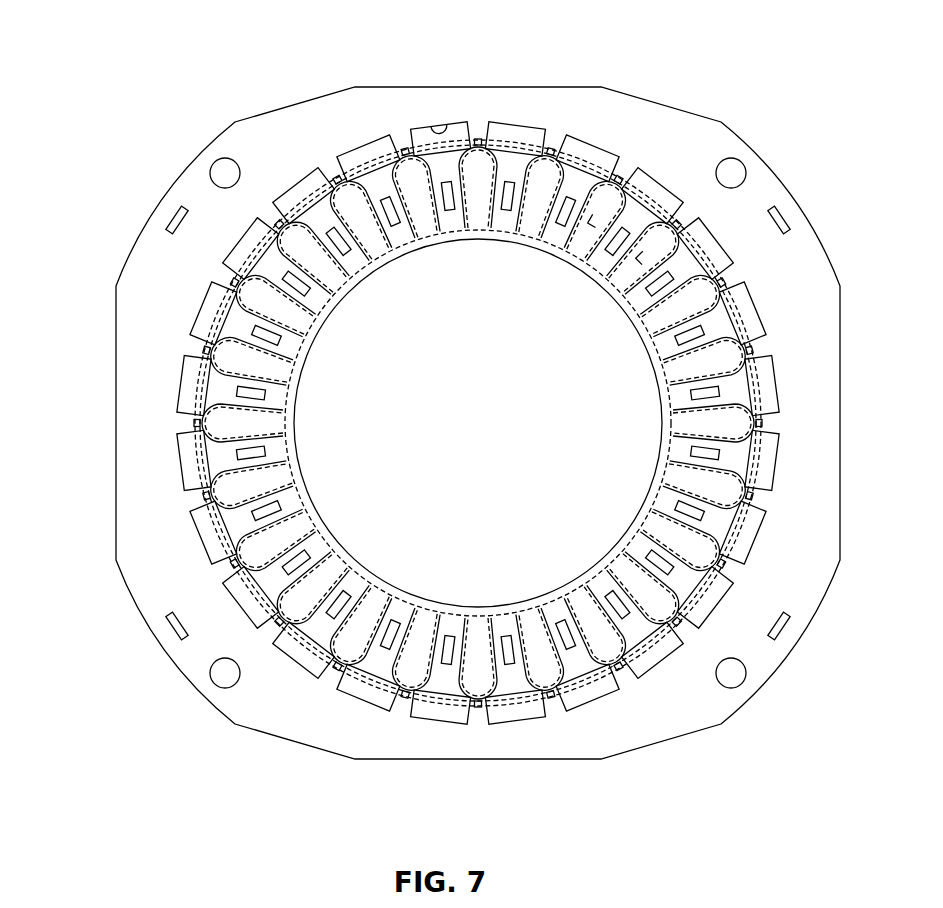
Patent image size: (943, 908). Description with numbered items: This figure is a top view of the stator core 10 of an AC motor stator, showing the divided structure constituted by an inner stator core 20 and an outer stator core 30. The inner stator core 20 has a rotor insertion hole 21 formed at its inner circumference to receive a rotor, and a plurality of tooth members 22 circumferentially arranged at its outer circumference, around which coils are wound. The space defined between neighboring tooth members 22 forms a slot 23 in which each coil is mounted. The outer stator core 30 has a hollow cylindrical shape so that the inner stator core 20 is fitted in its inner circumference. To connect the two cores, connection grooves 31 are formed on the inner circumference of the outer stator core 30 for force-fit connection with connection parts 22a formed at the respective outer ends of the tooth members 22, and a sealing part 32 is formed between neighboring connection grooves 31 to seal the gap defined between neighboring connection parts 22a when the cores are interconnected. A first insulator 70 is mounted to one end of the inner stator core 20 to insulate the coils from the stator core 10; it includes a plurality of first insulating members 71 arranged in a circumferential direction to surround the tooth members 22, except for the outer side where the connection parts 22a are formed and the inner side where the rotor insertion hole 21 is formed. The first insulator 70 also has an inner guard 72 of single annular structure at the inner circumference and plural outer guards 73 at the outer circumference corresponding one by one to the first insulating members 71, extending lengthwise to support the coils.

The stator core 10 is at (70, 128).
The inner stator core 20 is at (299, 176).
The rotor insertion hole 21 is at (478, 423).
The tooth member 22 is at (539, 139).
The connection part 22a is at (453, 95).
The slot 23 is at (632, 185).
The outer stator core 30 is at (150, 188).
The connection groove 31 is at (478, 370).
The sealing part 32 is at (420, 137).
The first insulator 70 is at (343, 101).
The first insulating member 71 is at (124, 386).
The inner guard 72 is at (159, 426).
The outer guard 73 is at (136, 313).